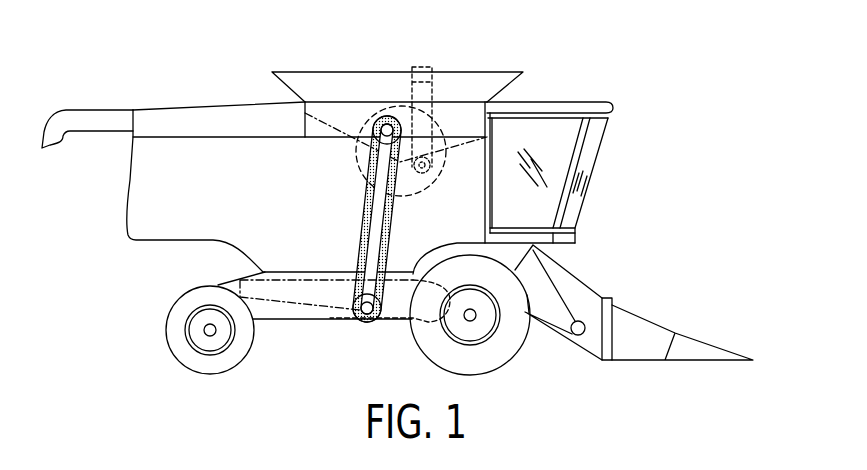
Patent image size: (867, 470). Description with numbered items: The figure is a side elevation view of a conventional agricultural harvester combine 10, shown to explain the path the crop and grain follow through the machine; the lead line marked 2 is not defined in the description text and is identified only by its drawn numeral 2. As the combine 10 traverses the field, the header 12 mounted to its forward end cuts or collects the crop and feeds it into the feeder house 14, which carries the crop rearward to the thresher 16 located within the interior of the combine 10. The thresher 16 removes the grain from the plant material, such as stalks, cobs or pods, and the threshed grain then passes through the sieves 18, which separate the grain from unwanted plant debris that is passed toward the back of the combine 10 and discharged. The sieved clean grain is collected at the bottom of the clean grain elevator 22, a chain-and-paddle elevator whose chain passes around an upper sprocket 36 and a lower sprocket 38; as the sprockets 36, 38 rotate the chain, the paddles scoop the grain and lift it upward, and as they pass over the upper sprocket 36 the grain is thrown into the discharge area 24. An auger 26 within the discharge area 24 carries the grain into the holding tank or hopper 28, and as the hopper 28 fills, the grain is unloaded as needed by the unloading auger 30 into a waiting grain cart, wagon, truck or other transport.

The grain unloading system 2 is at (397, 100).
The agricultural harvester combine 10 is at (668, 113).
The header 12 is at (638, 333).
The feeder house 14 is at (585, 297).
The thresher 16 is at (428, 288).
The sieves 18 is at (337, 290).
The clean grain elevator 22 is at (380, 203).
The discharge area 24 is at (423, 127).
The auger 26 is at (395, 100).
The hopper 28 is at (467, 115).
The unloading auger 30 is at (105, 110).
The upper sprocket 36 is at (383, 119).
The lower sprocket 38 is at (365, 318).